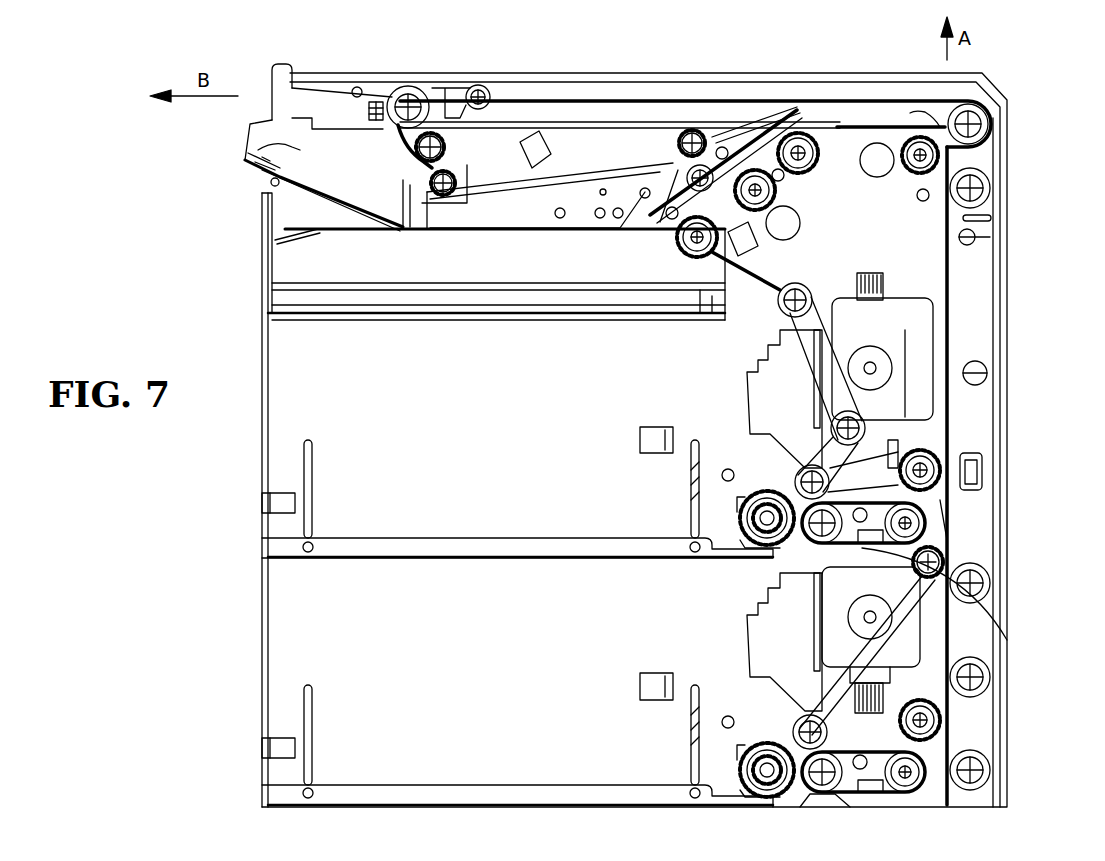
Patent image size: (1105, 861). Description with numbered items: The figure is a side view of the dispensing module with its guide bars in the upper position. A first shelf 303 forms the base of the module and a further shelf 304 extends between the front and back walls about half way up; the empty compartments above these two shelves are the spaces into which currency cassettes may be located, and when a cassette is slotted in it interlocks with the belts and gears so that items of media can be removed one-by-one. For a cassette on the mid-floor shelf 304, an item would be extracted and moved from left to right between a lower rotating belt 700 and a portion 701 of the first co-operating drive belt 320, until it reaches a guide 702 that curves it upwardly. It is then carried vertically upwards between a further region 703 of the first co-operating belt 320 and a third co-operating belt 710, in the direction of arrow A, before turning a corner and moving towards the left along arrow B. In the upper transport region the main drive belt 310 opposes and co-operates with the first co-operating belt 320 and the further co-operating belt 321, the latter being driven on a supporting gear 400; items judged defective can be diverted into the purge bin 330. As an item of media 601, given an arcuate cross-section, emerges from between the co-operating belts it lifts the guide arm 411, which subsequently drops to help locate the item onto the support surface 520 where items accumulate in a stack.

The first shelf 303 is at (238, 796).
The further shelf 304 is at (238, 551).
The main drive belt 310 is at (655, 93).
The first co-operating drive belt 320 is at (768, 112).
The further co-operating drive belt 321 is at (505, 190).
The purge bin 330 is at (305, 258).
The supporting gear 400 is at (470, 133).
The further guide arm 411 is at (332, 112).
The support surface 520 is at (252, 140).
The item of media 601 is at (322, 125).
The lower rotating belt 700 is at (940, 612).
The portion of the first co-operating belt 701 is at (940, 480).
The guide 702 is at (940, 515).
The further region of the first co-operating belt 703 is at (935, 290).
The third co-operating belt 710 is at (993, 327).